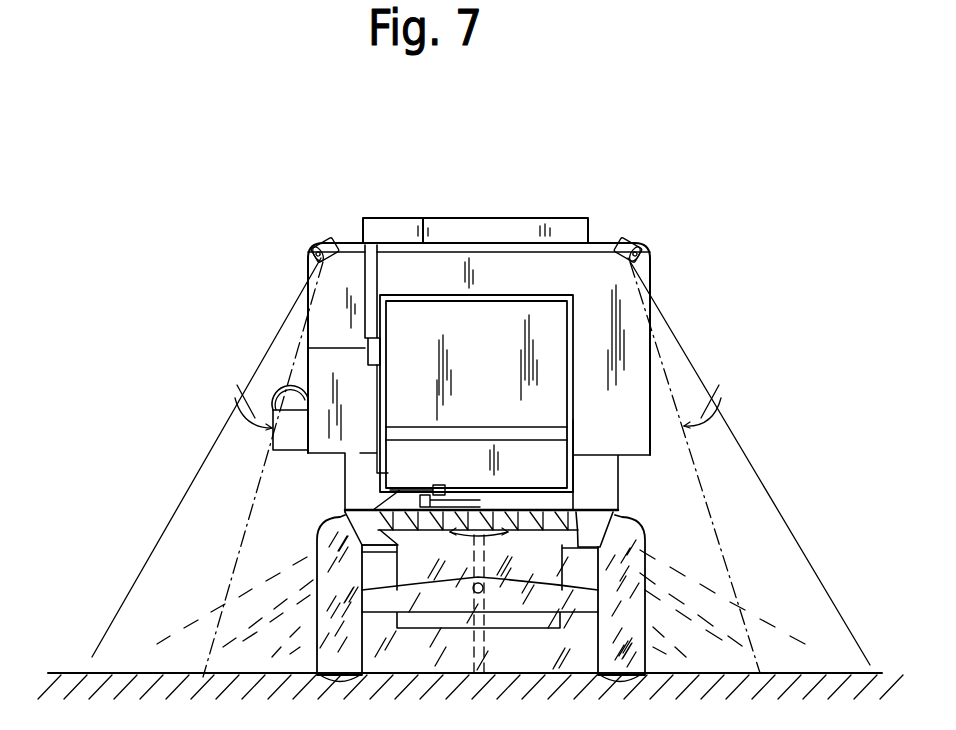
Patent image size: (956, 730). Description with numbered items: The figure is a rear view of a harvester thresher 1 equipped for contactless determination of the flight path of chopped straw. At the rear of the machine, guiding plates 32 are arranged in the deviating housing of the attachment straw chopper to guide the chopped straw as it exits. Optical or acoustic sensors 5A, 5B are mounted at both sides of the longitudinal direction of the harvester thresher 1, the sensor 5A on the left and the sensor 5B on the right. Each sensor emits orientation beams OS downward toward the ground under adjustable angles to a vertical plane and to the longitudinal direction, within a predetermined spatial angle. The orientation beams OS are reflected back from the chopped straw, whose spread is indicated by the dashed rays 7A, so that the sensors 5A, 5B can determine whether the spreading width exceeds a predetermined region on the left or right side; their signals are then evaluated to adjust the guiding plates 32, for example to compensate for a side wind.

The harvester thresher 1 is at (508, 200).
The left sensor 5A is at (324, 238).
The right sensor 5B is at (637, 243).
The guiding plates 32 is at (590, 508).
The orientation beams OS is at (170, 520).
The detection rays 7A is at (773, 625).